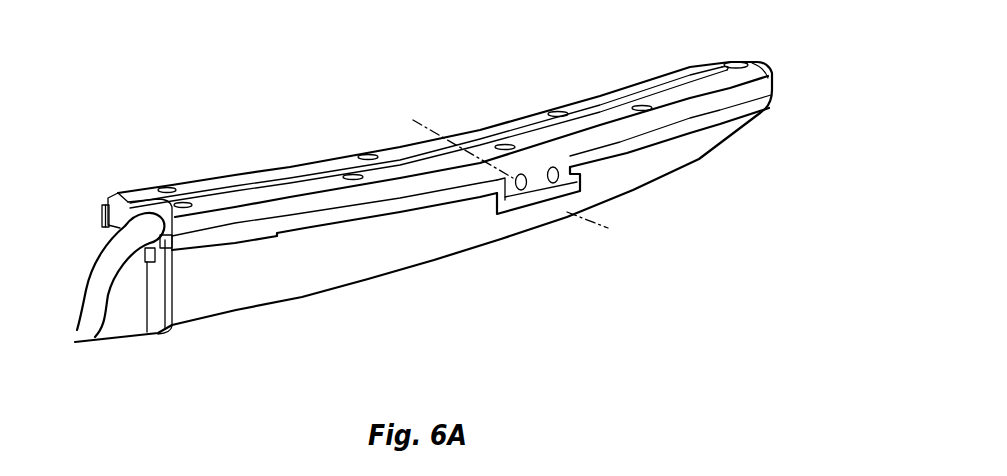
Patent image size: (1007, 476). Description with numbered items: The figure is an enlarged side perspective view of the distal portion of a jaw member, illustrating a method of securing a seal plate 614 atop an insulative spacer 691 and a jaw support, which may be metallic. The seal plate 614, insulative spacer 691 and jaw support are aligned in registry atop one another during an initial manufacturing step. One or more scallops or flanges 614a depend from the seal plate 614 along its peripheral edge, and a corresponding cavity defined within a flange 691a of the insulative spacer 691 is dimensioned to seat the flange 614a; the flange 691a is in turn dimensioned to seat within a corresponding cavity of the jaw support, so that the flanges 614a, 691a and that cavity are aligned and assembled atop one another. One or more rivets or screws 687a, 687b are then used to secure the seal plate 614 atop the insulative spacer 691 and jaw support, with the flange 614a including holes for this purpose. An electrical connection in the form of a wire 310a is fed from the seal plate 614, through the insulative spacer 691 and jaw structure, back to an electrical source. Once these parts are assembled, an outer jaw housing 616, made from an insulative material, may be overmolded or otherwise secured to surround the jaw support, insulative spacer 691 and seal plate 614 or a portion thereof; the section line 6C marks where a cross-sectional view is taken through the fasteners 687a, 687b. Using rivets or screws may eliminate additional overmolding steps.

The seal plate 614 is at (690, 77).
The flange 614a is at (510, 196).
The outer jaw housing 616 is at (713, 152).
The insulative spacer 691 is at (773, 88).
The flange of insulative spacer 691a is at (502, 170).
The rivet or screw 687a is at (521, 191).
The rivet or screw 687b is at (554, 184).
The wire 310a is at (118, 245).
The section line 6C is at (452, 113).